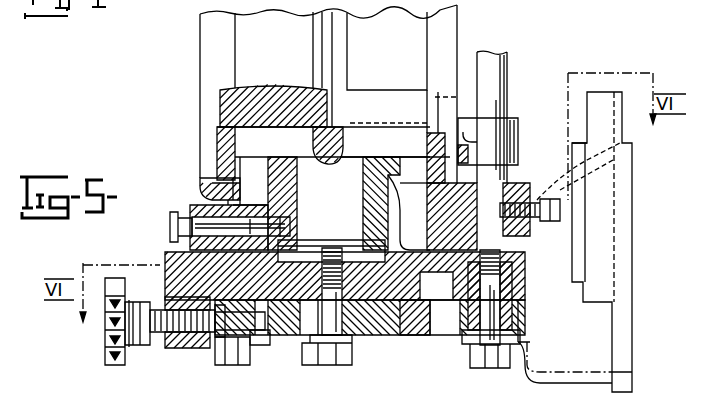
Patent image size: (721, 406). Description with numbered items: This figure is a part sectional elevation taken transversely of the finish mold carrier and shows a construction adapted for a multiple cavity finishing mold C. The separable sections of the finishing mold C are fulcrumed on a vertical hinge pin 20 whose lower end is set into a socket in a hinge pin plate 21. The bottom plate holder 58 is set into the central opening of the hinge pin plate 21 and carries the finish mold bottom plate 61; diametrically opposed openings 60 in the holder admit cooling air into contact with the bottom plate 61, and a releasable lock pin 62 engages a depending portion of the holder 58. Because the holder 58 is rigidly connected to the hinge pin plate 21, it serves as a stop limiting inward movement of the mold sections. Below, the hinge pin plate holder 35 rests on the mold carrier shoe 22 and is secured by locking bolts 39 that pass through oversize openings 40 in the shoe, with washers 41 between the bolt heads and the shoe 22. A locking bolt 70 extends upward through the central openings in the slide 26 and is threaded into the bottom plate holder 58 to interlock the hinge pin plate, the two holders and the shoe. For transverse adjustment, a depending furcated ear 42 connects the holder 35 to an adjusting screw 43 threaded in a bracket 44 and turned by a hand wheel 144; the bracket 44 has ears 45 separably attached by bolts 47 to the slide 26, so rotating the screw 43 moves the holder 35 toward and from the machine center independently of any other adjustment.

The finishing mold C is at (200, 62).
The finish mold bottom plate 61 is at (298, 77).
The hinge pin plate 21 is at (200, 178).
The bottom plate holder 58 is at (373, 165).
The vertical hinge pin 20 is at (500, 172).
The releasable lock pin 62 is at (172, 230).
The diametrically opposed openings 60 is at (318, 226).
The mold carrier shoe 22 is at (420, 320).
The slide 26 is at (390, 338).
The hinge pin plate holder 35 is at (418, 305).
The locking bolt 70 is at (337, 334).
The locking bolts 39 is at (485, 315).
The openings 40 is at (500, 312).
The washers 41 is at (517, 332).
The hand wheel 144 is at (110, 366).
The adjusting screw 43 is at (158, 345).
The holder or bracket 44 is at (208, 345).
The depending furcated ear 42 is at (226, 338).
The bolts 47 is at (238, 368).
The ears 45 is at (248, 346).